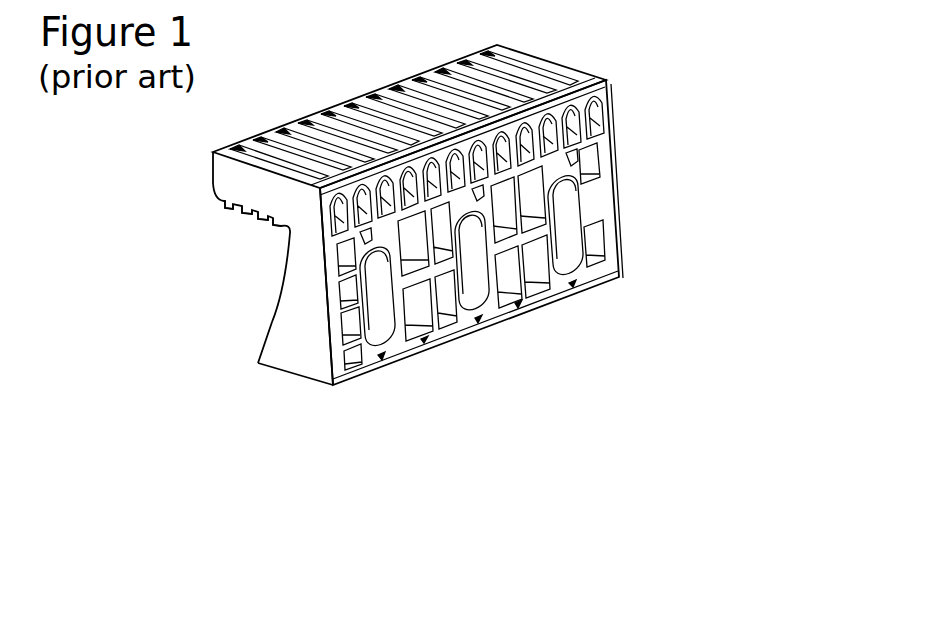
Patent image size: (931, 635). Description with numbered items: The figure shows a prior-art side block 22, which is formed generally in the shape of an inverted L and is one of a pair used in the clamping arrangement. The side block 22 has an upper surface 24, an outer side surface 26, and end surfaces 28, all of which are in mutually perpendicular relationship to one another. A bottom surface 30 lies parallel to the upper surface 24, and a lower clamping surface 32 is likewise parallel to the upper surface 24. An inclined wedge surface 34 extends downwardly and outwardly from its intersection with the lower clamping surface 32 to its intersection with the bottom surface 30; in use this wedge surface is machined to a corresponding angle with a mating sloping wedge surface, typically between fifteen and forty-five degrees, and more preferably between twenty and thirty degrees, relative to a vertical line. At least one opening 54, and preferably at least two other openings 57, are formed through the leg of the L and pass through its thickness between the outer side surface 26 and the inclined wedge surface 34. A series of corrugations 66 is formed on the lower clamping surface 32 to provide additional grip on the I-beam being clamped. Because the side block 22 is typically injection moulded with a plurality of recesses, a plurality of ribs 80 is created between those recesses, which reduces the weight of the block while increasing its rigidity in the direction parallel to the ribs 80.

The side block 22 is at (638, 120).
The upper surface 24 is at (530, 88).
The outer side surface 26 is at (592, 268).
The end surface 28 is at (284, 330).
The bottom surface 30 is at (309, 387).
The lower clamping surface 32 is at (241, 221).
The inclined wedge surface 34 is at (279, 275).
The opening 54 is at (473, 293).
The other openings 57 is at (563, 216).
The corrugations 66 is at (263, 222).
The ribs 80 is at (585, 113).